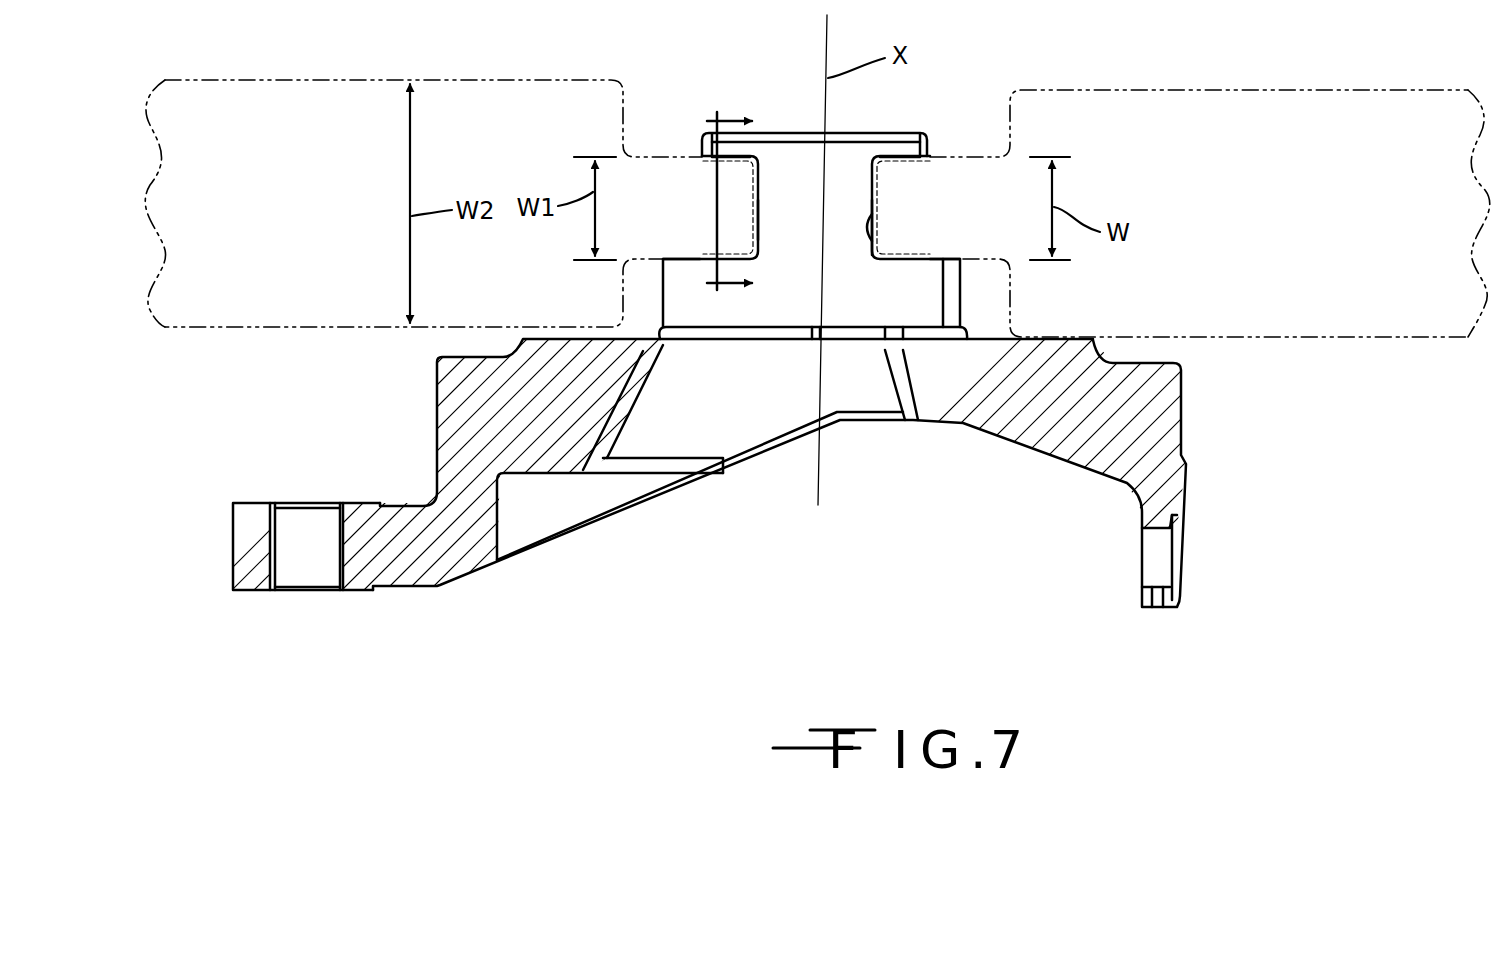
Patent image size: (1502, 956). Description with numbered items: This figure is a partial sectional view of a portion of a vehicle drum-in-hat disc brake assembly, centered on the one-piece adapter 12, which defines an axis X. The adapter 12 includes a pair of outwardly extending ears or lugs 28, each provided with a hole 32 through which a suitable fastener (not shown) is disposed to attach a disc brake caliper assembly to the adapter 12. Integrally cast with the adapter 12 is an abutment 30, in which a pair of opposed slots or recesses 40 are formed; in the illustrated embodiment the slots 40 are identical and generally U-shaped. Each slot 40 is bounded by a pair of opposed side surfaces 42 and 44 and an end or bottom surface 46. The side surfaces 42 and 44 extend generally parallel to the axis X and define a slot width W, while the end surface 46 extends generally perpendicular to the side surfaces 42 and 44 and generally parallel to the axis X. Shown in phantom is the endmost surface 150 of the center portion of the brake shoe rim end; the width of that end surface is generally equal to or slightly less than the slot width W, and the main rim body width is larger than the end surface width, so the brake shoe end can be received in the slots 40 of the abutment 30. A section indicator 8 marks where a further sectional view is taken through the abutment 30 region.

The section line 8- 8 is at (721, 200).
The adapter 12 is at (1190, 440).
The ears 28 is at (238, 546).
The abutment 30 is at (888, 122).
The holes 32 is at (277, 560).
The slots 40 is at (737, 163).
The side surface 42 is at (722, 158).
The side surface 44 is at (690, 258).
The end surface 46 is at (758, 218).
The endmost surface 150 is at (762, 184).